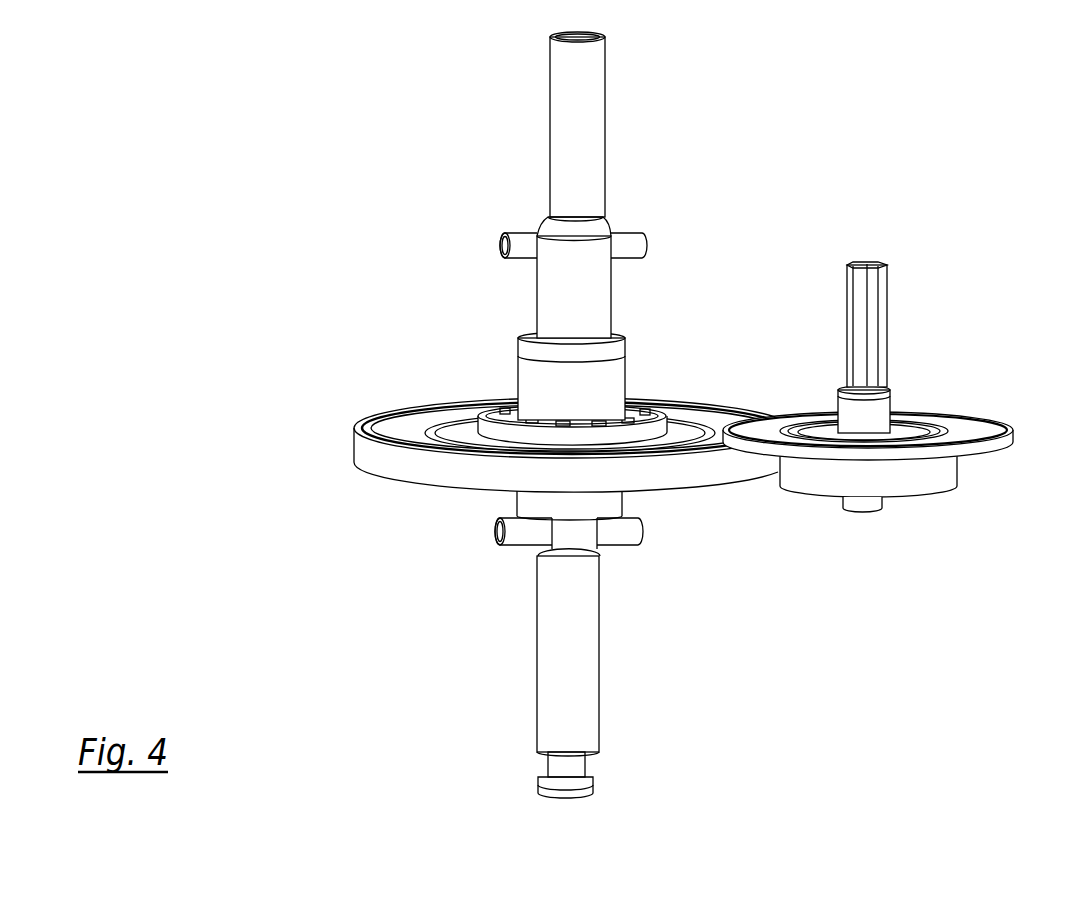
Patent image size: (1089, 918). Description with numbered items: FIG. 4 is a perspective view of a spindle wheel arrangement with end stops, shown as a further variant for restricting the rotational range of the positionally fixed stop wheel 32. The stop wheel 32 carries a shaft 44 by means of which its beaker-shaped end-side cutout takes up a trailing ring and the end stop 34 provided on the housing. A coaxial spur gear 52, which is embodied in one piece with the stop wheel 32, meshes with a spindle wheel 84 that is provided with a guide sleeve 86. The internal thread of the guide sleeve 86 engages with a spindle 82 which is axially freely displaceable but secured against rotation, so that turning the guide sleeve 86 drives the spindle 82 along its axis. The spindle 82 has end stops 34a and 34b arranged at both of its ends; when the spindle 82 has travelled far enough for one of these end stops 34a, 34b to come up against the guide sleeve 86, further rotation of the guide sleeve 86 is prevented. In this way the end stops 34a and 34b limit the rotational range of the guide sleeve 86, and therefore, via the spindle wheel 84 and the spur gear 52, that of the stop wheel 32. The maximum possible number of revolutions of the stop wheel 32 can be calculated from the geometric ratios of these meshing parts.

The stop wheel 32 is at (975, 432).
The end stop 34 is at (909, 428).
The end stop 34a is at (636, 243).
The end stop 34b is at (633, 527).
The shaft 44 is at (875, 307).
The coaxial spur gear 52 is at (945, 480).
The spindle 82 is at (594, 289).
The spindle wheel 84 is at (392, 462).
The guide sleeve 86 is at (610, 383).